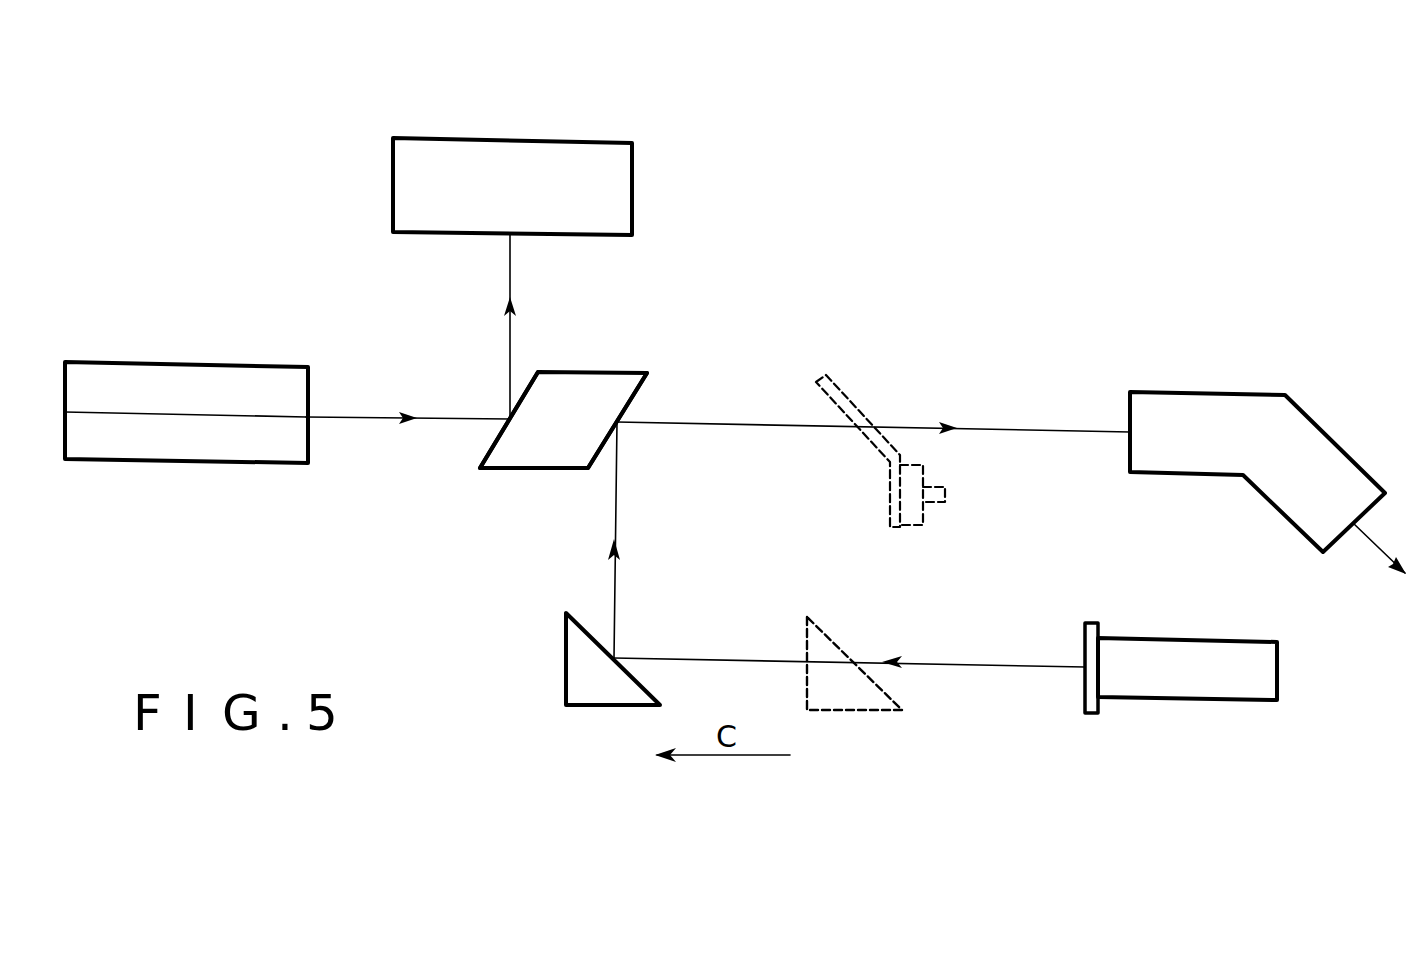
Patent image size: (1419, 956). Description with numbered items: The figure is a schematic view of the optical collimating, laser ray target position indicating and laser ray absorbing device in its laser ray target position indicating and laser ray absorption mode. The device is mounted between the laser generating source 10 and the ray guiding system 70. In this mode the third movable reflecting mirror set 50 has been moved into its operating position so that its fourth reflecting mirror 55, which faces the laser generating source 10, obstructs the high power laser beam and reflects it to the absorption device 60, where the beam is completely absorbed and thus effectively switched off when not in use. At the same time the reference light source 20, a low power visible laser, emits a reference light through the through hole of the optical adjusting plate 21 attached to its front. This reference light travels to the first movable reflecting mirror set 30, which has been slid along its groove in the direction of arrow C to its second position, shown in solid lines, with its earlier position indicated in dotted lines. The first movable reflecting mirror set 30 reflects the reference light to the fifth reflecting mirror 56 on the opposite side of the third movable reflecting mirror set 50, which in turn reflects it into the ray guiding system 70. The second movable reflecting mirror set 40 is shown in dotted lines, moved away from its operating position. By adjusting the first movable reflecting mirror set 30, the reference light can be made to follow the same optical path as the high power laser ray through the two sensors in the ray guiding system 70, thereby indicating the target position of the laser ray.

The laser generating source 10 is at (198, 360).
The reference light source 20 is at (1192, 702).
The optical adjusting plate 21 is at (1090, 715).
The first movable reflecting mirror set 30 is at (588, 707).
The second movable reflecting mirror set 40 is at (858, 407).
The third movable reflecting mirror set 50 is at (590, 372).
The fourth reflecting mirror 55 is at (483, 450).
The fifth reflecting mirror 56 is at (633, 400).
The absorption device 60 is at (552, 140).
The ray guiding system 70 is at (1215, 392).